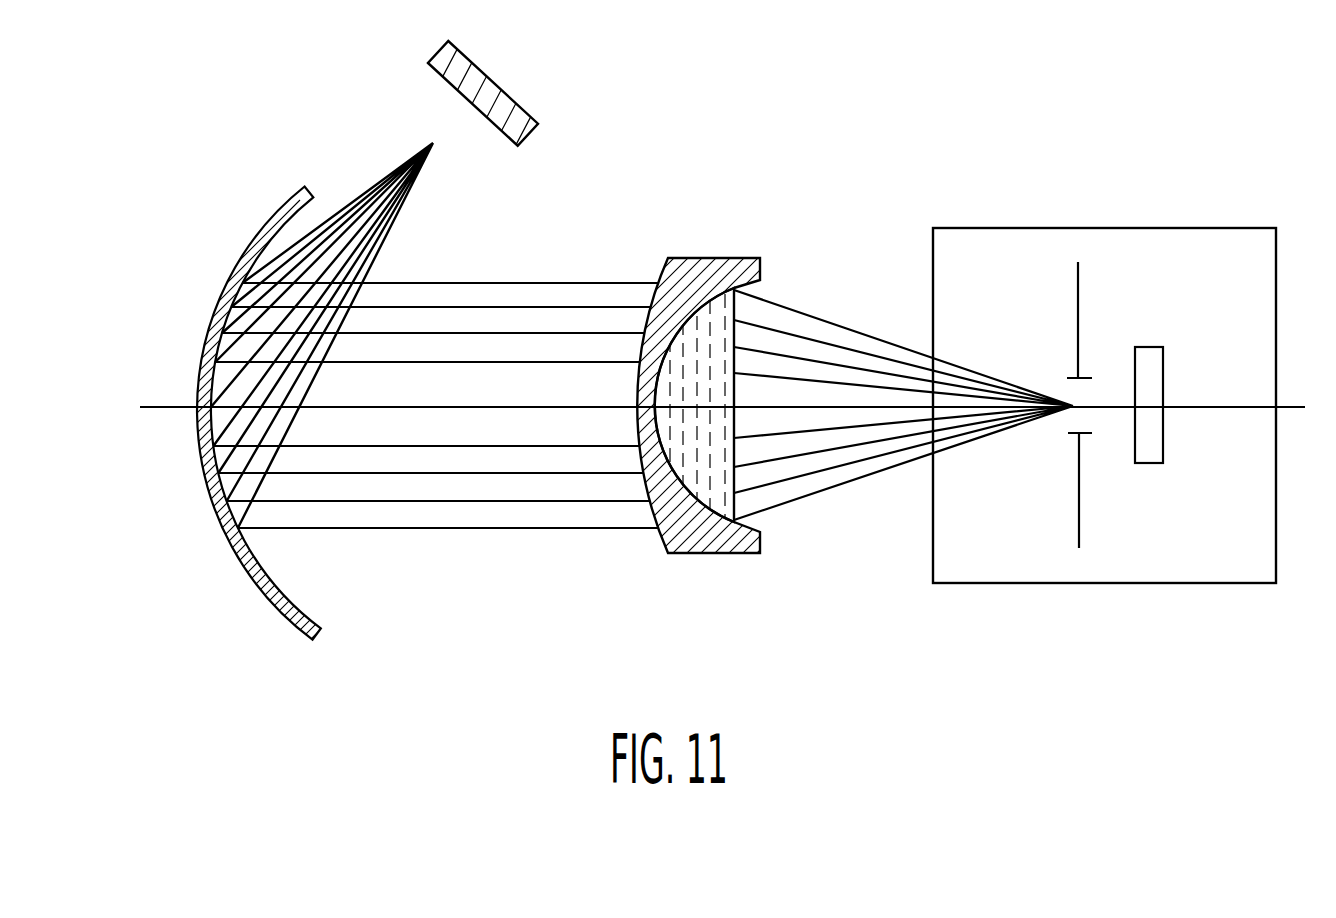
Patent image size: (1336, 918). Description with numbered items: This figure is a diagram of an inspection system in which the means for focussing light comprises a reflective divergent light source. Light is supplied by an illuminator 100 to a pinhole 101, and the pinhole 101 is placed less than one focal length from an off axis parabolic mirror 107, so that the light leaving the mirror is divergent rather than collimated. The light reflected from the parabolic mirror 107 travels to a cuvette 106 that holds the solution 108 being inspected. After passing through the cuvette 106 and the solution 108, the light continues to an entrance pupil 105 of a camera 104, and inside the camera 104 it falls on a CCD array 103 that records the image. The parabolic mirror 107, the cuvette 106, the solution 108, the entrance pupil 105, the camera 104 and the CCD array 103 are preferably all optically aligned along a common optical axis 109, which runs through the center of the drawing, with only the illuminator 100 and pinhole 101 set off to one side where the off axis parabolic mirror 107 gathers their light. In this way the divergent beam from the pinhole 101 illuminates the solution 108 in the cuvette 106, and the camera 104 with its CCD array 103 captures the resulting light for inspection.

The illuminator 100 is at (530, 127).
The pinhole 101 is at (433, 143).
The CCD array 103 is at (1150, 345).
The camera 104 is at (1048, 583).
The entrance pupil 105 is at (1080, 376).
The cuvette 106 is at (704, 556).
The off axis parabolic mirror 107 is at (286, 196).
The solution 108 is at (713, 322).
The optical axis 109 is at (432, 410).